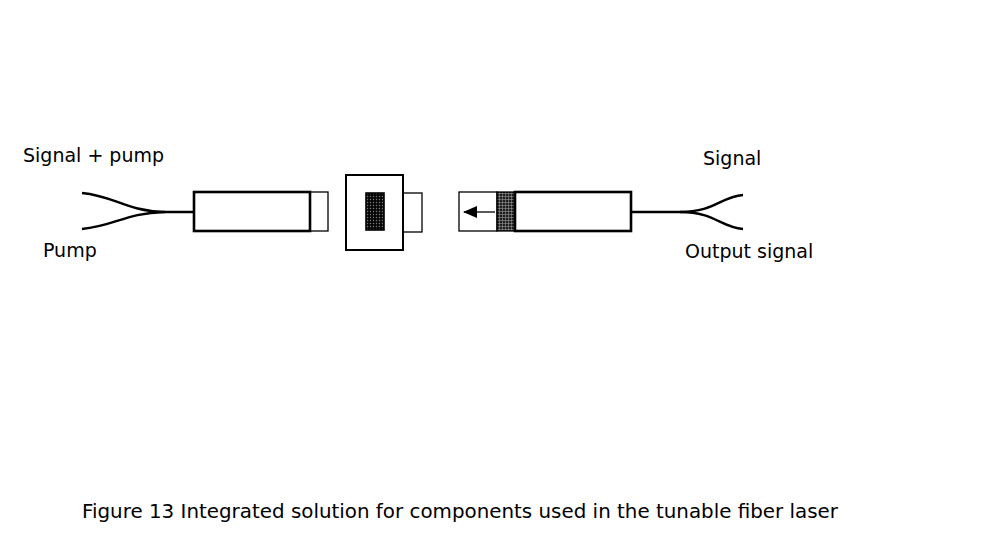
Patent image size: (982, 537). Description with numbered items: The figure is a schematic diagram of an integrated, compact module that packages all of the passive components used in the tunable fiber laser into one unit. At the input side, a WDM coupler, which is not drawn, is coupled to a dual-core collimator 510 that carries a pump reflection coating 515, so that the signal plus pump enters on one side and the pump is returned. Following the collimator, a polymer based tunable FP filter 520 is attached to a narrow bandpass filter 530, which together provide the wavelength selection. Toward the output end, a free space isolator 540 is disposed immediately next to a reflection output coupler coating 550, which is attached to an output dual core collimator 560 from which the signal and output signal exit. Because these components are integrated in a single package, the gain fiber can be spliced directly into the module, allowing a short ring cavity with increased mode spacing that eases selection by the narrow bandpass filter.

The dual-core collimator 510 is at (251, 249).
The pump reflection coating 515 is at (310, 252).
The polymer based tunable FP filter 520 is at (365, 156).
The narrow bandpass filter 530 is at (422, 253).
The free space isolator 540 is at (478, 174).
The reflection output coupler coating 550 is at (514, 253).
The output dual core collimator 560 is at (573, 249).